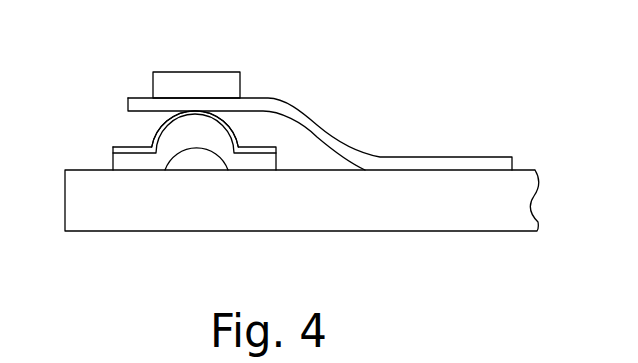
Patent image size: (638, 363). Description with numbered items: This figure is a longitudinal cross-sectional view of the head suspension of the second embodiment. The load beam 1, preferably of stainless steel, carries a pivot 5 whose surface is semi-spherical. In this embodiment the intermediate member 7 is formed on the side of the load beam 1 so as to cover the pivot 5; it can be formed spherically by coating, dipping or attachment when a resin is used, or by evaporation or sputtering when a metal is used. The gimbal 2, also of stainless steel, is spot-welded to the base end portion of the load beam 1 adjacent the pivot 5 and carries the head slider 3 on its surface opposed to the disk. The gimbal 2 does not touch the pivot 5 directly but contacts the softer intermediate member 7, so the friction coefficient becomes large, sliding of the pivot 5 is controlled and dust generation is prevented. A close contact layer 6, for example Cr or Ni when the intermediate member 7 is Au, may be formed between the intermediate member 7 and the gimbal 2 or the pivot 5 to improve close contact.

The load beam 1 is at (468, 215).
The gimbal 2 is at (343, 142).
The head slider 3 is at (218, 78).
The pivot 5 is at (193, 160).
The close contact layer 6 is at (232, 128).
The intermediate member 7 is at (130, 160).